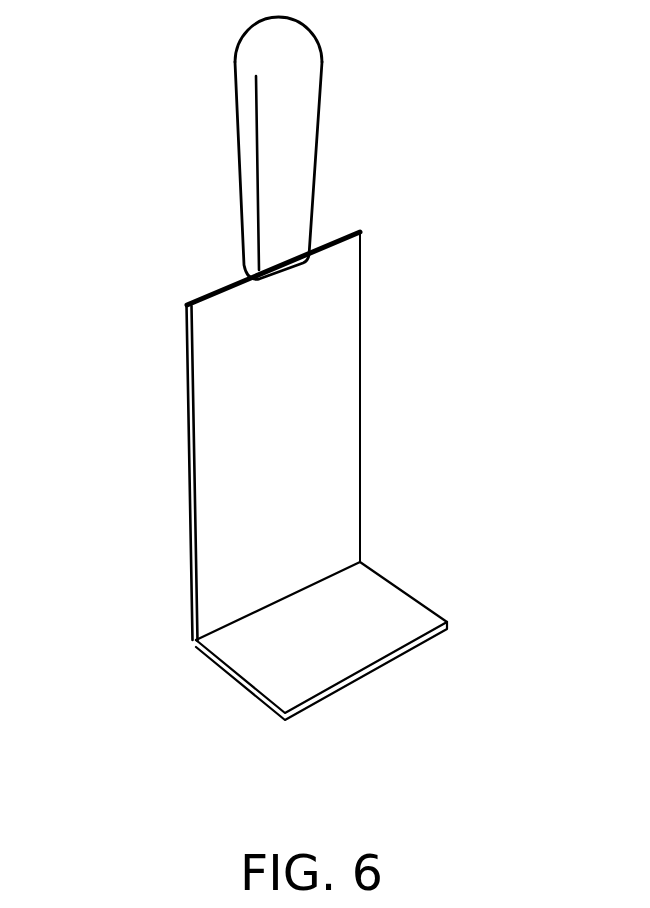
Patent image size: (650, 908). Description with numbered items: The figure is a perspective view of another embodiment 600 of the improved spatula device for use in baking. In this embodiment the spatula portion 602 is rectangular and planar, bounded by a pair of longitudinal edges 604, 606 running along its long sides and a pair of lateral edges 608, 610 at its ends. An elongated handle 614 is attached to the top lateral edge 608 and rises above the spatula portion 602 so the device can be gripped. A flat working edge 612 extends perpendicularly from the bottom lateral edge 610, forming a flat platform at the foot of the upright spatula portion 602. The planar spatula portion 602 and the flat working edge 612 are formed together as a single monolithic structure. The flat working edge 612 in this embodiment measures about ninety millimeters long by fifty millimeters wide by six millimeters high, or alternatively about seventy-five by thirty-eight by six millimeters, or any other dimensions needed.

The embodiment of the improved spatula device 600 is at (158, 218).
The spatula portion 602 is at (225, 417).
The longitudinal edge 604 is at (190, 520).
The longitudinal edge 606 is at (361, 438).
The top lateral edge 608 is at (283, 147).
The bottom lateral edge 610 is at (362, 563).
The flat working edge 612 is at (243, 683).
The elongated handle 614 is at (263, 56).